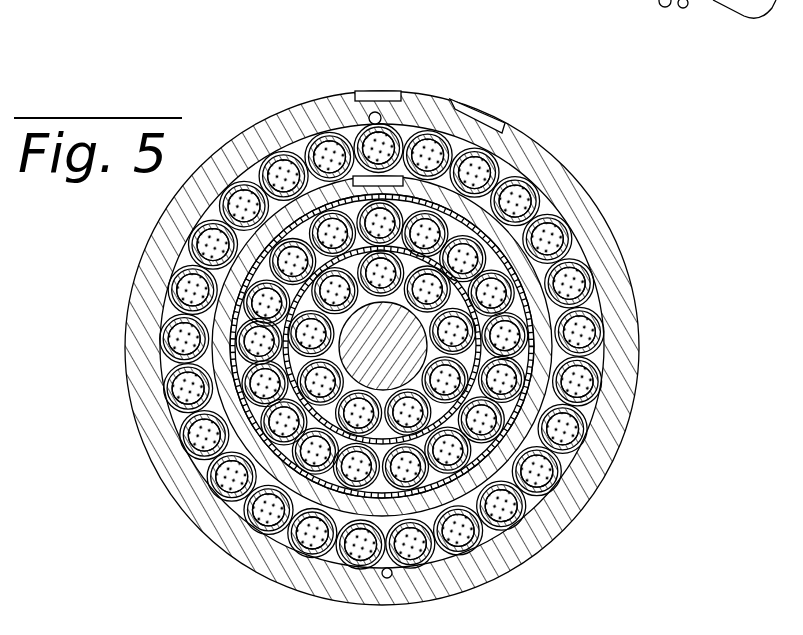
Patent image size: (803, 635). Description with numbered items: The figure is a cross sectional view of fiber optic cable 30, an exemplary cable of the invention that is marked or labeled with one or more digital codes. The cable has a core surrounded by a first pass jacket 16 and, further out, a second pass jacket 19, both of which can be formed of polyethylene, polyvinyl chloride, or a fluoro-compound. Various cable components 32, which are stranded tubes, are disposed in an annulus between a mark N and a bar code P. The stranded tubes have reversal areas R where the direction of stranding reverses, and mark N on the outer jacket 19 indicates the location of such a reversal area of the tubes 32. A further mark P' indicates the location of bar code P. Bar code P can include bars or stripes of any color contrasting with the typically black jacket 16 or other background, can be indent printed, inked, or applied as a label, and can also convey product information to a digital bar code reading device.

The fiber optic cable 30 is at (437, 304).
The second pass jacket 19 is at (495, 138).
The cable components 32 is at (421, 286).
The first pass jacket 16 is at (297, 206).
The bar code P is at (312, 89).
The mark P' is at (511, 91).
The reversal area R is at (407, 130).
The mark N is at (378, 99).